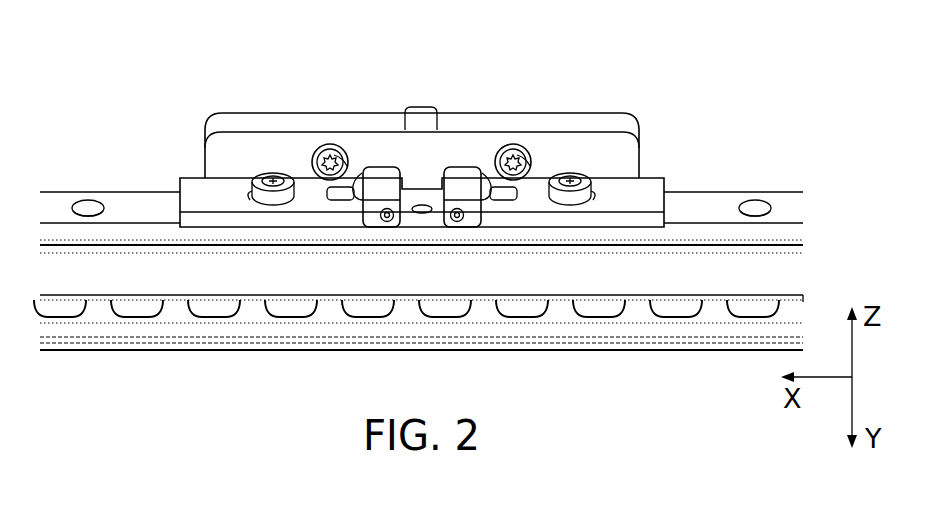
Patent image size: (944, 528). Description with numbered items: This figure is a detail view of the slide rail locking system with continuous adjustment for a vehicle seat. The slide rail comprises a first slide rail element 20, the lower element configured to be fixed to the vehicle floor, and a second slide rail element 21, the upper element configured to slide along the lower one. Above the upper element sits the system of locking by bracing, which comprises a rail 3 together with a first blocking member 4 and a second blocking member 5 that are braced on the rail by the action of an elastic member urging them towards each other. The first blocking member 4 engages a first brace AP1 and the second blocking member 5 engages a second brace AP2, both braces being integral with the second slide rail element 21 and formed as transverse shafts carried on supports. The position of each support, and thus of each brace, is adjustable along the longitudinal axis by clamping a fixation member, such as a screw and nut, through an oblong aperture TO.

The rail 3 is at (397, 122).
The first blocking member 4 is at (384, 167).
The second blocking member 5 is at (459, 167).
The first brace AP1 is at (386, 211).
The second brace AP2 is at (458, 211).
The oblong aperture TO is at (250, 193).
The first slide rail element 20 is at (682, 333).
The second slide rail element 21 is at (717, 210).